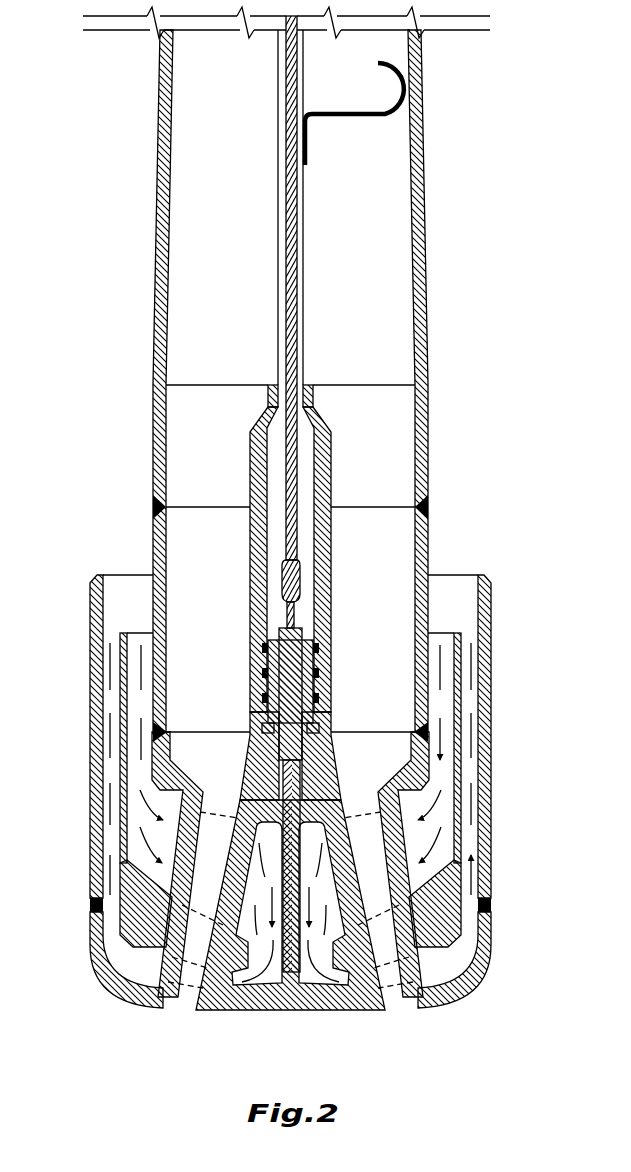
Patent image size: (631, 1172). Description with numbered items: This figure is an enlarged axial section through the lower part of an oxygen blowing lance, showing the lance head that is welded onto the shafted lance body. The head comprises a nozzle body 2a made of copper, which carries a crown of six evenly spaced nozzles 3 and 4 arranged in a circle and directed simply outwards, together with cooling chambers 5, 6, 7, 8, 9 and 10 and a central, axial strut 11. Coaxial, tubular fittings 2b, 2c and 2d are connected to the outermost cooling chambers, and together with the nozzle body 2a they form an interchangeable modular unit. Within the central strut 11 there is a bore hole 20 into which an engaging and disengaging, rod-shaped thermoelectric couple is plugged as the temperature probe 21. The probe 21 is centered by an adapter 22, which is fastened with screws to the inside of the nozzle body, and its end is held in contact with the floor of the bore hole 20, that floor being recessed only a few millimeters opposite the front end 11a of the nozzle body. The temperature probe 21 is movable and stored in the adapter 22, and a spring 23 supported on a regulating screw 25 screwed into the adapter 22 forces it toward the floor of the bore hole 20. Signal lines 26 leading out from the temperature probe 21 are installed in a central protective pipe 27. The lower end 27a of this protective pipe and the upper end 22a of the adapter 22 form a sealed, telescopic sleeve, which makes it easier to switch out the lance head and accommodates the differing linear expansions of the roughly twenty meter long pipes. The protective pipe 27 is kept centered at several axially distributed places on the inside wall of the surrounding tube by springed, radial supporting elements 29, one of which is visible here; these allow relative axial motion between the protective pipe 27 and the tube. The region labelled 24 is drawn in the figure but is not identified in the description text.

The nozzle body 2a is at (463, 987).
The tubular fitting 2b is at (492, 835).
The tubular fitting 2c is at (463, 782).
The tubular fitting 2d is at (322, 660).
The nozzle 3 is at (180, 997).
The nozzle 4 is at (393, 997).
The cooling chamber 5 is at (150, 925).
The cooling chamber 6 is at (492, 905).
The cooling chamber 7 is at (130, 957).
The cooling chamber 8 is at (165, 862).
The cooling chamber 9 is at (463, 947).
The cooling chamber 10 is at (323, 895).
The central axial strut 11 is at (255, 947).
The front end of the nozzle body 11a is at (273, 997).
The bore hole 20 is at (395, 806).
The temperature probe 21 is at (303, 945).
The adapter 22 is at (313, 757).
The upper end of the adapter 22a is at (317, 642).
The spring 23 is at (262, 750).
The air inlet passage 24 is at (205, 795).
The regulating screw 25 is at (280, 714).
The signal lines 26 is at (297, 457).
The central protective pipe 27 is at (302, 313).
The lower end of the protective pipe 27a is at (322, 672).
The springed radial supporting element 29 is at (362, 116).